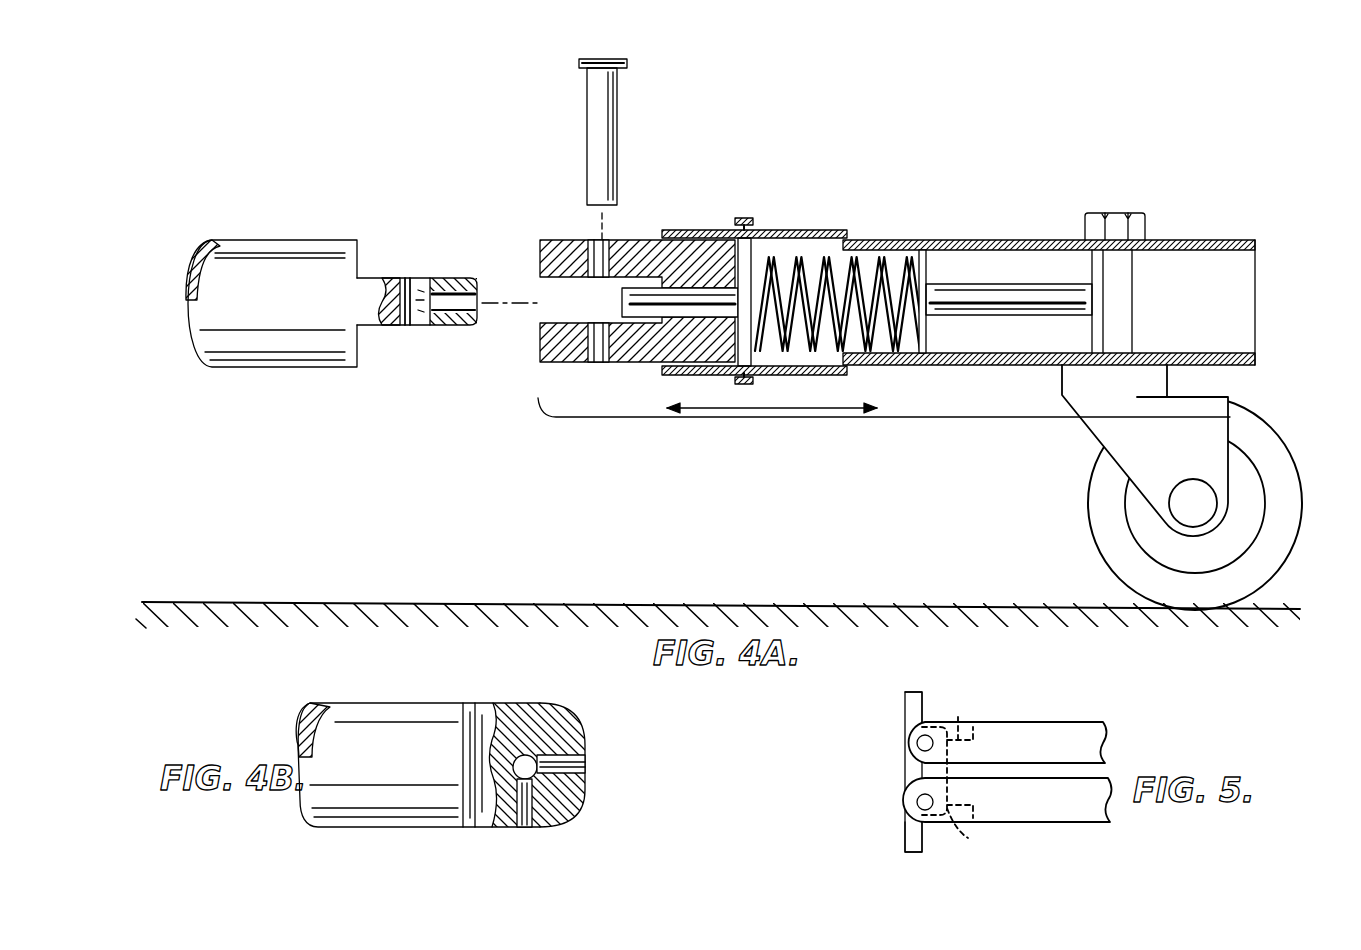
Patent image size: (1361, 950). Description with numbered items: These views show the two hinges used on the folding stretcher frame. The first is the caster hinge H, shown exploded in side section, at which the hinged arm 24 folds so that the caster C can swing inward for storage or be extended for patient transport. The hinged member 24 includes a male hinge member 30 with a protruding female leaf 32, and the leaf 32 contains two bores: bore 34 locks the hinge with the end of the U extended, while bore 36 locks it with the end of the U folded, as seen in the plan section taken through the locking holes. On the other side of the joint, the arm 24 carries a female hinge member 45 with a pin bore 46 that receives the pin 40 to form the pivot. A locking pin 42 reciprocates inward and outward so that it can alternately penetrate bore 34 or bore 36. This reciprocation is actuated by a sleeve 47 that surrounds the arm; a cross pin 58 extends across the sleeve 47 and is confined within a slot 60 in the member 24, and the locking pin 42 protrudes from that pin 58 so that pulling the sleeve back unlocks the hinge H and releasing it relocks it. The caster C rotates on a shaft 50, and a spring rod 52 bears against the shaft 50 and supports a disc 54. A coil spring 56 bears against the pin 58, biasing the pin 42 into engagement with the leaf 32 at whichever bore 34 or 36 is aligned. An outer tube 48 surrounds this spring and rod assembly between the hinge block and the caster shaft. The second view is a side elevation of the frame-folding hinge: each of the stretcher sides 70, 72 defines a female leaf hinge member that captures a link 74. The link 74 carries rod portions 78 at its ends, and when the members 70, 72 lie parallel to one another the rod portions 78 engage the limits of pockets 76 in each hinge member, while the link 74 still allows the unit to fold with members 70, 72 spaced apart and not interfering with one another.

In FIG. 4A, the hinged arm 24 is at (865, 419).
In FIG. 4A, the male hinge member 30 is at (323, 366).
In FIG. 4B, the male hinge member 30 is at (410, 705).
In FIG. 4A, the female leaf 32 is at (436, 327).
In FIG. 4B, the female leaf 32 is at (587, 739).
In FIG. 4B, the bore 34 is at (586, 762).
In FIG. 4B, the bore 36 is at (520, 828).
In FIG. 4A, the pin 40 is at (618, 108).
In FIG. 4A, the pin 42 is at (643, 287).
In FIG. 4A, the female hinge member 45 is at (548, 362).
In FIG. 4A, the pin bore 46 is at (416, 297).
In FIG. 4A, the sleeve 47 is at (780, 230).
In FIG. 4A, the tube 48 is at (894, 241).
In FIG. 4A, the shaft 50 is at (1133, 272).
In FIG. 4A, the spring rod 52 is at (979, 285).
In FIG. 4A, the disc 54 is at (921, 338).
In FIG. 4A, the coil spring 56 is at (803, 343).
In FIG. 4A, the pin 58 is at (765, 222).
In FIG. 4A, the slot 60 is at (812, 247).
In FIG. 5, the stretcher side 70 is at (1032, 823).
In FIG. 5, the stretcher side 72 is at (1033, 721).
In FIG. 5, the link 74 is at (902, 777).
In FIG. 5, the pocket 76 is at (972, 702).
In FIG. 5, the rod portion 78 is at (905, 707).
In FIG. 4A, the caster C is at (1280, 440).
In FIG. 4A, the hinge H is at (501, 199).
In FIG. 5, the hinge H is at (893, 752).